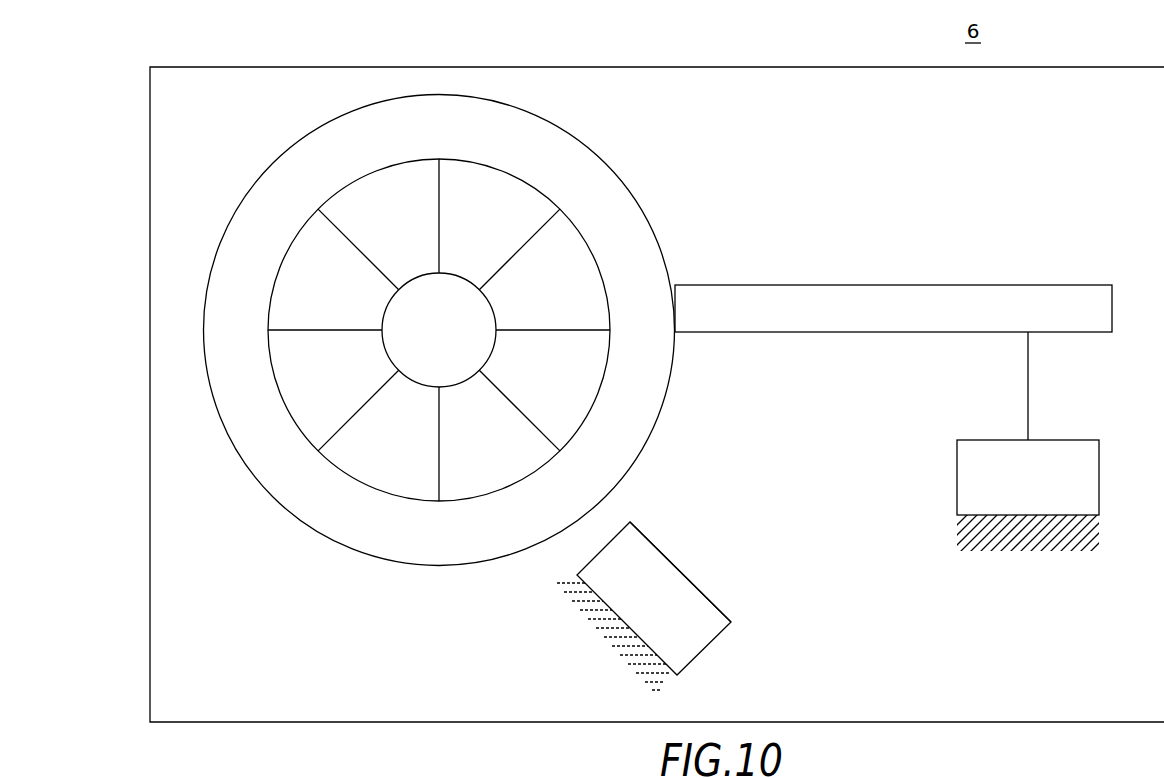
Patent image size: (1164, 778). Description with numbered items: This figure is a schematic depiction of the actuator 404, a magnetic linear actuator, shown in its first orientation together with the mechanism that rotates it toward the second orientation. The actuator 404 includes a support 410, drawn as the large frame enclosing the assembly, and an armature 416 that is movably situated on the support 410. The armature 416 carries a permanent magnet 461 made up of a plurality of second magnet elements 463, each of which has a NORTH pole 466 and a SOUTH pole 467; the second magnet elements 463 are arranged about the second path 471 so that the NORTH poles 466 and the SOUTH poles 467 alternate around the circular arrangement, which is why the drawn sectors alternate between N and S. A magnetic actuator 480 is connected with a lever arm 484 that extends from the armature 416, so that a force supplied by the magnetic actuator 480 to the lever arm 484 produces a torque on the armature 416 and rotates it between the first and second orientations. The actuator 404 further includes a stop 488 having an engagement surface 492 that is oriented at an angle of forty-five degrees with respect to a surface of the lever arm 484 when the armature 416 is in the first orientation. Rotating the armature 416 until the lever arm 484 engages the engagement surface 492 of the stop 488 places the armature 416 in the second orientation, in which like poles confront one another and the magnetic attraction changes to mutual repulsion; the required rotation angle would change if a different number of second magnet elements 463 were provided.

The support 410 is at (413, 67).
The actuator 404 is at (672, 149).
The armature 416 is at (664, 239).
The permanent magnet 461 is at (441, 324).
The second magnet elements 463 is at (455, 165).
The NORTH pole 466 is at (513, 192).
The SOUTH pole 467 is at (382, 186).
The second path 471 is at (394, 501).
The lever arm 484 is at (880, 285).
The magnetic actuator 480 is at (1065, 440).
The stop 488 is at (716, 638).
The engagement surface 492 is at (669, 560).